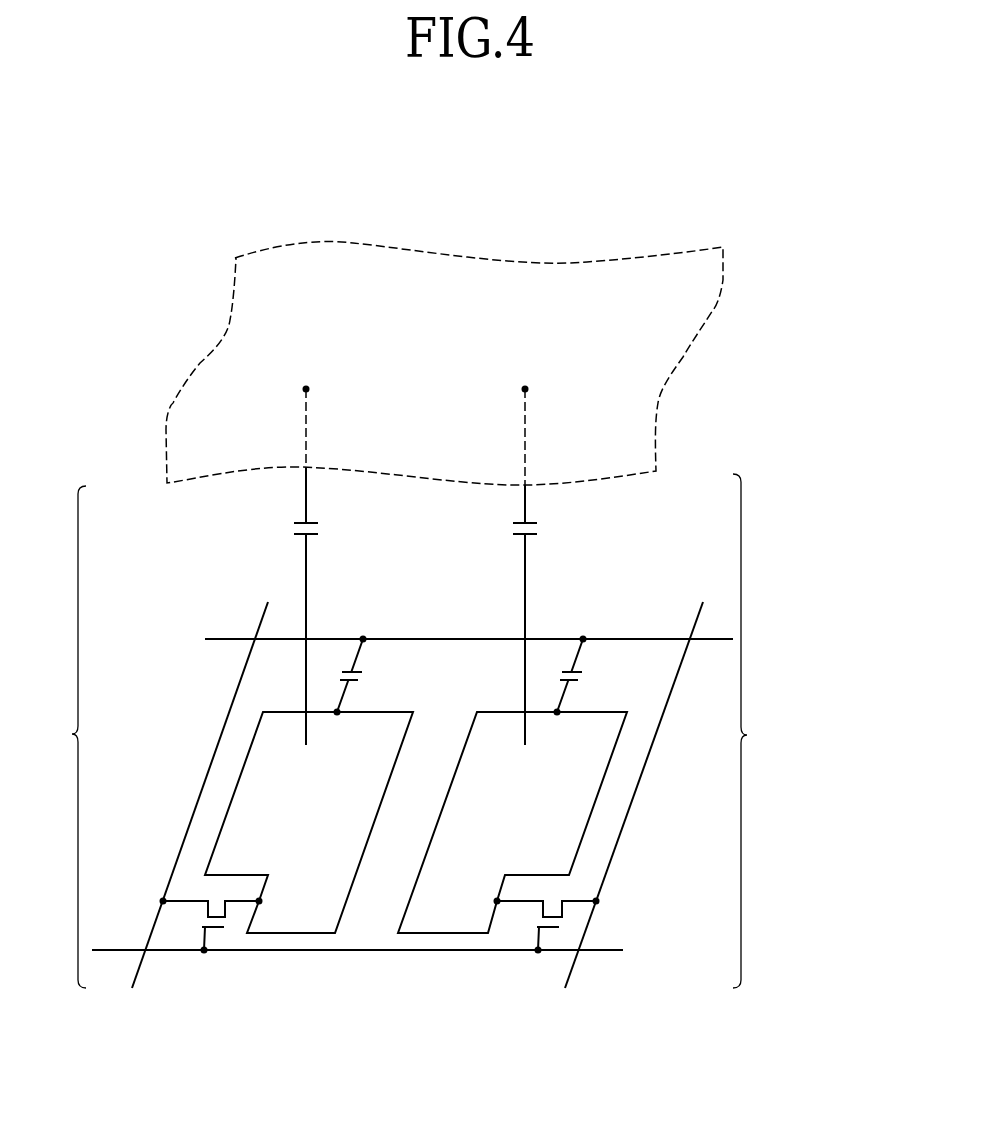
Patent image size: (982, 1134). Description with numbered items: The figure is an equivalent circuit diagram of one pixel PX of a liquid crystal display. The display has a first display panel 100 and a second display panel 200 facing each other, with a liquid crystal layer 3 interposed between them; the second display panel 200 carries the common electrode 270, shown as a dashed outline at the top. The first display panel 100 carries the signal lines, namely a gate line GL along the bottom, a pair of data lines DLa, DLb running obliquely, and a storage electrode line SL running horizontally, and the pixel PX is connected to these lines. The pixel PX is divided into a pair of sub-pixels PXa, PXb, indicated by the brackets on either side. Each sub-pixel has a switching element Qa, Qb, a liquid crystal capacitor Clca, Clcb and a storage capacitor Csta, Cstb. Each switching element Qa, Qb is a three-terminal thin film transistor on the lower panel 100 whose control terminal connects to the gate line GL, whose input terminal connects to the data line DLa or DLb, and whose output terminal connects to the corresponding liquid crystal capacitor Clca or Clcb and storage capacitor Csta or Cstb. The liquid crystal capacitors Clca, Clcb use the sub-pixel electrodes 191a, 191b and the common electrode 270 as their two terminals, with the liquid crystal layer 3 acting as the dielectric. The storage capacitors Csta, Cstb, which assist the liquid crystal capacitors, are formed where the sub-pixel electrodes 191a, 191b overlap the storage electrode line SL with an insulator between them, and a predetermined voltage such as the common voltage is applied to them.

The second display panel 200 is at (516, 364).
The common electrode 270 is at (713, 310).
The liquid crystal layer 3 is at (576, 606).
The first display panel 100 is at (459, 763).
The liquid crystal capacitor Clca is at (333, 606).
The liquid crystal capacitor Clcb is at (552, 615).
The storage capacitor Csta is at (379, 676).
The storage capacitor Cstb is at (599, 676).
The storage electrode line SL is at (450, 638).
The gate line GL is at (377, 949).
The data line DLa is at (212, 778).
The data line DLb is at (645, 778).
The switching element Qa is at (211, 926).
The switching element Qb is at (547, 926).
The sub-pixel electrode 191a is at (297, 935).
The sub-pixel electrode 191b is at (600, 789).
The pixel PX is at (433, 982).
The sub-pixel PXa is at (220, 745).
The sub-pixel PXb is at (601, 731).